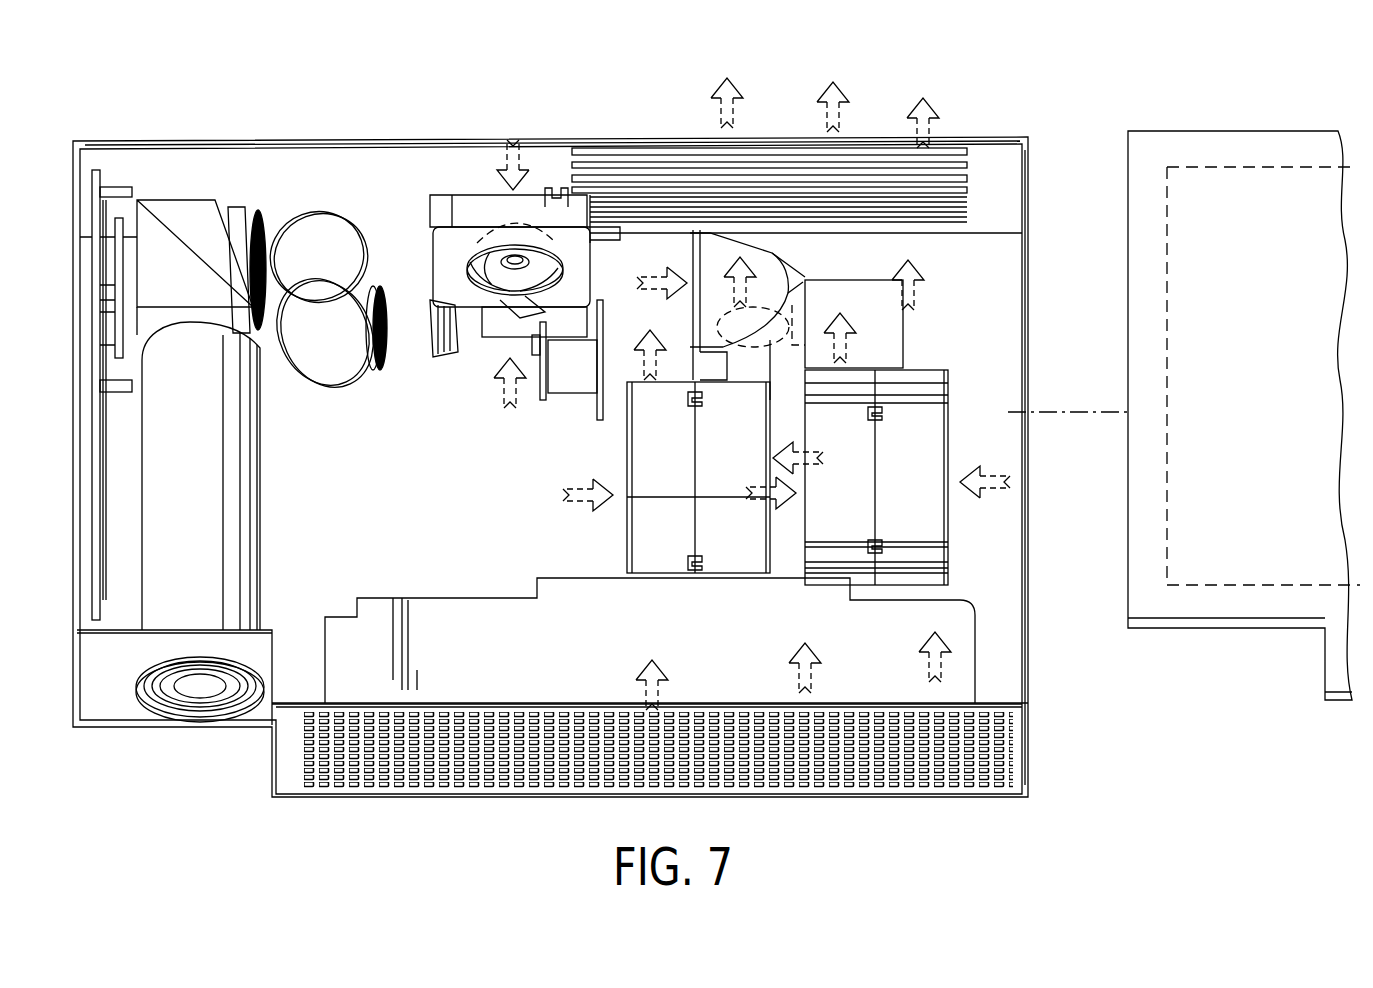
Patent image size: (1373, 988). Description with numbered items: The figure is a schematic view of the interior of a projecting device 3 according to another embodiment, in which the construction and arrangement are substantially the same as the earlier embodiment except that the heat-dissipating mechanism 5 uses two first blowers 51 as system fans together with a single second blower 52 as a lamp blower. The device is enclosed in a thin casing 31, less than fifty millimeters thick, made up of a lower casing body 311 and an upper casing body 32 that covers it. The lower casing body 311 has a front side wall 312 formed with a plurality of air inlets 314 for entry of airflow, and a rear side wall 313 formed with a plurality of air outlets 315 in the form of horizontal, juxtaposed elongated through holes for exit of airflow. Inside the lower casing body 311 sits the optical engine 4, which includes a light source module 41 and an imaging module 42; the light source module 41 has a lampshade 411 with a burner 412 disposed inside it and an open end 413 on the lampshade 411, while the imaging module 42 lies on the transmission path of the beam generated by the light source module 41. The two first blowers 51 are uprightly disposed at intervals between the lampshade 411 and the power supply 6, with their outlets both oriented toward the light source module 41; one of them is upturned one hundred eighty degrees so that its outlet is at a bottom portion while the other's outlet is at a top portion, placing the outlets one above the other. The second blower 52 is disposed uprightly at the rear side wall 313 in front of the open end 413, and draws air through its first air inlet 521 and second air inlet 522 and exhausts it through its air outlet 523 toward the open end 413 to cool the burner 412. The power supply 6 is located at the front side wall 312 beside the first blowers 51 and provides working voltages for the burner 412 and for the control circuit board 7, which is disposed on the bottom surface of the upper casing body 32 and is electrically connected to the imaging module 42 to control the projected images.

The projecting device 3 is at (1103, 51).
The casing 31 is at (1041, 131).
The lower casing body 311 is at (1005, 300).
The front side wall 312 is at (1025, 729).
The rear side wall 313 is at (293, 172).
The air inlets 314 is at (975, 777).
The air outlets 315 is at (888, 156).
The upper casing body 32 is at (1200, 153).
The optical engine 4 is at (780, 50).
The light source module 41 is at (778, 236).
The lampshade 411 is at (697, 297).
The burner 412 is at (792, 299).
The open end 413 is at (673, 233).
The imaging module 42 is at (180, 185).
The heat-dissipating mechanism 5 is at (498, 466).
The first blower 51 is at (645, 440).
The second blower 52 is at (433, 277).
The first air inlet 521 is at (520, 297).
The second air inlet 522 is at (486, 198).
The air outlet 523 is at (593, 237).
The power supply 6 is at (618, 655).
The control circuit board 7 is at (1262, 587).